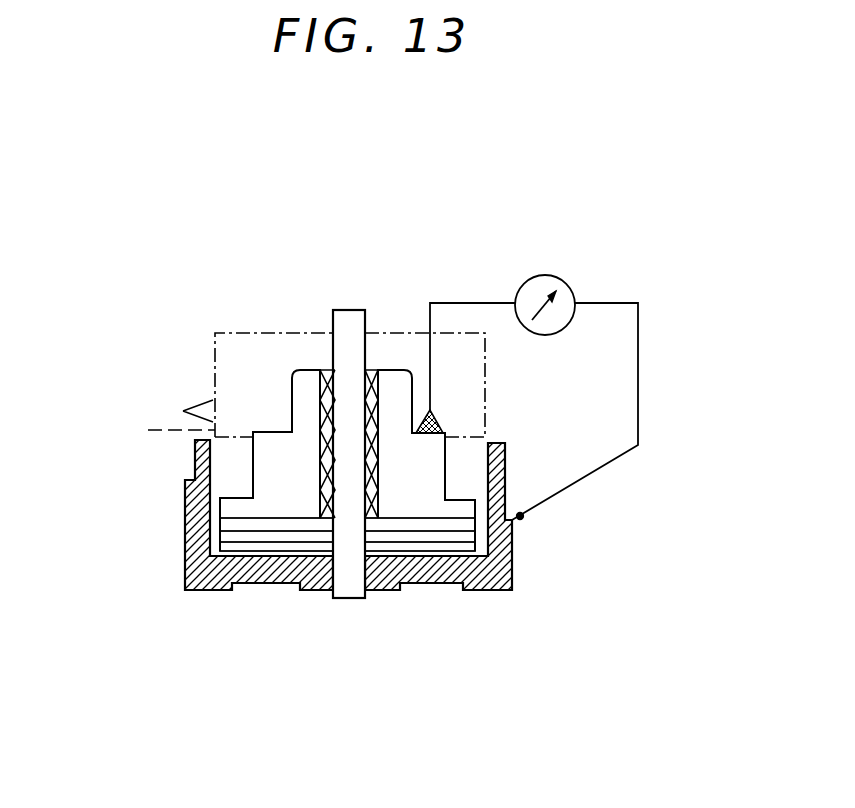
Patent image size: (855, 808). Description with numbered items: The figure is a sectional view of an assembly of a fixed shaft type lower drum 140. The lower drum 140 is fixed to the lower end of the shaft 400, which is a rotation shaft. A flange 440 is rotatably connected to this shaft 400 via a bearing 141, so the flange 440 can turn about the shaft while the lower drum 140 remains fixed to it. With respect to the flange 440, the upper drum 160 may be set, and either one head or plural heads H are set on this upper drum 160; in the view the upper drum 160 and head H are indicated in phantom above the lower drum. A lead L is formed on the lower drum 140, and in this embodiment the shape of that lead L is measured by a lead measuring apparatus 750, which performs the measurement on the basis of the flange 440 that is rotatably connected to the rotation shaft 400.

The lower drum 140 is at (200, 587).
The shaft 400 is at (345, 578).
The flange 440 is at (300, 385).
The bearing 141 is at (330, 383).
The upper drum 160 is at (222, 333).
The head H is at (183, 410).
The lead measuring apparatus 750 is at (540, 275).
The lead L is at (194, 478).